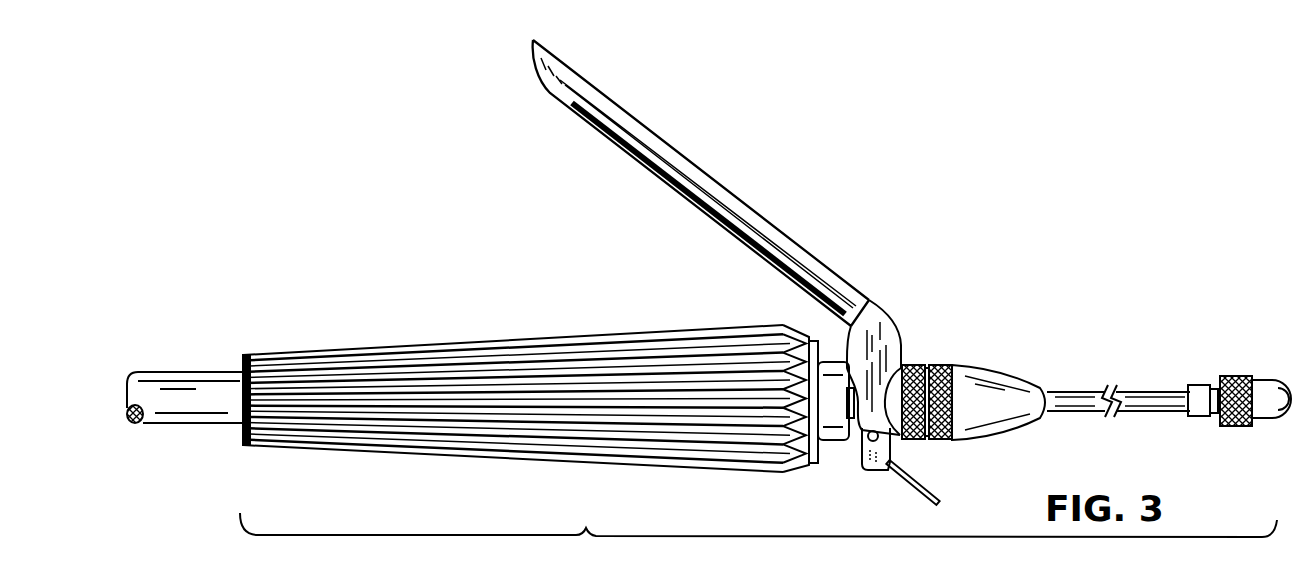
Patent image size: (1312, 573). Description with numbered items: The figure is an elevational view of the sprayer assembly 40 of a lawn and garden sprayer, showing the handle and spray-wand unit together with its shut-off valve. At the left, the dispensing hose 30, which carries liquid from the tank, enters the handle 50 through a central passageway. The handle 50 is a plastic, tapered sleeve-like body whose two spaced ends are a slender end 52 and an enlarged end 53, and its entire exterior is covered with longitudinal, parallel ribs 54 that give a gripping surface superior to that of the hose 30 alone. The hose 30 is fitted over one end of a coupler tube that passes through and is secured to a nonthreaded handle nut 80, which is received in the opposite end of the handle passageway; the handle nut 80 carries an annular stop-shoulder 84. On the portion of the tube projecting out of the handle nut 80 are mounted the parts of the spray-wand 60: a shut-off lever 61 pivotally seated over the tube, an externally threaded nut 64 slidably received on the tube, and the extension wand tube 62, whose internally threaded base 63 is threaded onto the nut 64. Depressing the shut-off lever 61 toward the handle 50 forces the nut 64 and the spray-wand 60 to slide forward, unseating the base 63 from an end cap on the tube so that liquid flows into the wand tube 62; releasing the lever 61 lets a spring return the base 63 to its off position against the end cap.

The dispensing hose 30 is at (198, 368).
The sprayer assembly 40 is at (758, 543).
The handle 50 is at (520, 312).
The slender end 52 is at (297, 355).
The enlarged end 53 is at (712, 323).
The longitudinal parallel ribs 54 is at (676, 468).
The spray-wand 60 is at (983, 318).
The shut-off lever 61 is at (805, 248).
The extension wand tube 62 is at (1168, 416).
The base of wand tube 63 is at (1005, 363).
The externally threaded nut 64 is at (913, 443).
The handle nut 80 is at (833, 467).
The annular stop-shoulder 84 is at (812, 460).